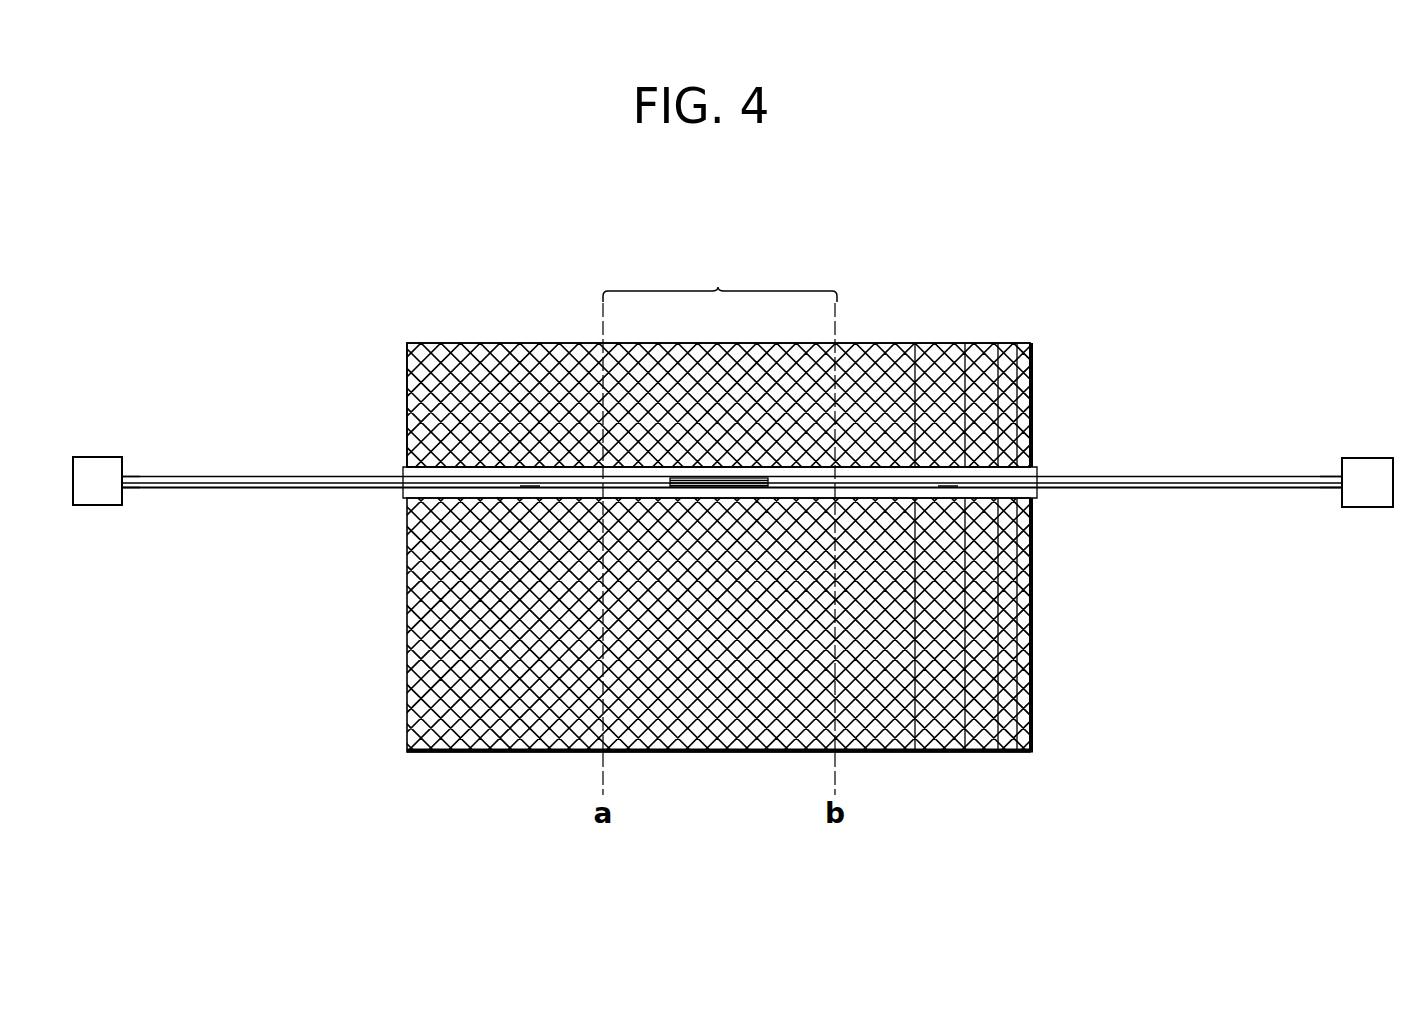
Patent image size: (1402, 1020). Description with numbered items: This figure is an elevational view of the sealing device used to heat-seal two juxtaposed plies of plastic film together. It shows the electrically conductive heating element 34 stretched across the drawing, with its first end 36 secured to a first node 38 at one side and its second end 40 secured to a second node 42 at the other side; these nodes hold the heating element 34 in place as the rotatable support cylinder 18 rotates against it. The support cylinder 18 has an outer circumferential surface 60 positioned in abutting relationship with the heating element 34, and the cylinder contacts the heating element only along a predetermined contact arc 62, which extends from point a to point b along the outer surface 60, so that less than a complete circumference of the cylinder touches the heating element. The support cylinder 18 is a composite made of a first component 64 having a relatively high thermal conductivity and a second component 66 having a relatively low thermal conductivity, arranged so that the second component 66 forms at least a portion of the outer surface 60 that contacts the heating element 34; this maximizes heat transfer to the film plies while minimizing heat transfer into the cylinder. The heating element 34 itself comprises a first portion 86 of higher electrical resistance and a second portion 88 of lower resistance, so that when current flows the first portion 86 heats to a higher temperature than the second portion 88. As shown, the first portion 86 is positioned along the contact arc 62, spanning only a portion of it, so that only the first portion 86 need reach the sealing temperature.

The rotatable support cylinder 18 is at (862, 343).
The heating element 34 is at (1288, 472).
The first end 36 is at (128, 488).
The first node 38 is at (100, 500).
The second end 40 is at (1337, 490).
The second node 42 is at (1362, 462).
The outer circumferential surface 60 is at (1046, 386).
The contact arc 62 is at (720, 524).
The first component 64 is at (407, 392).
The second component 66 is at (1037, 470).
The first portion 86 is at (740, 478).
The second portion 88 is at (528, 486).